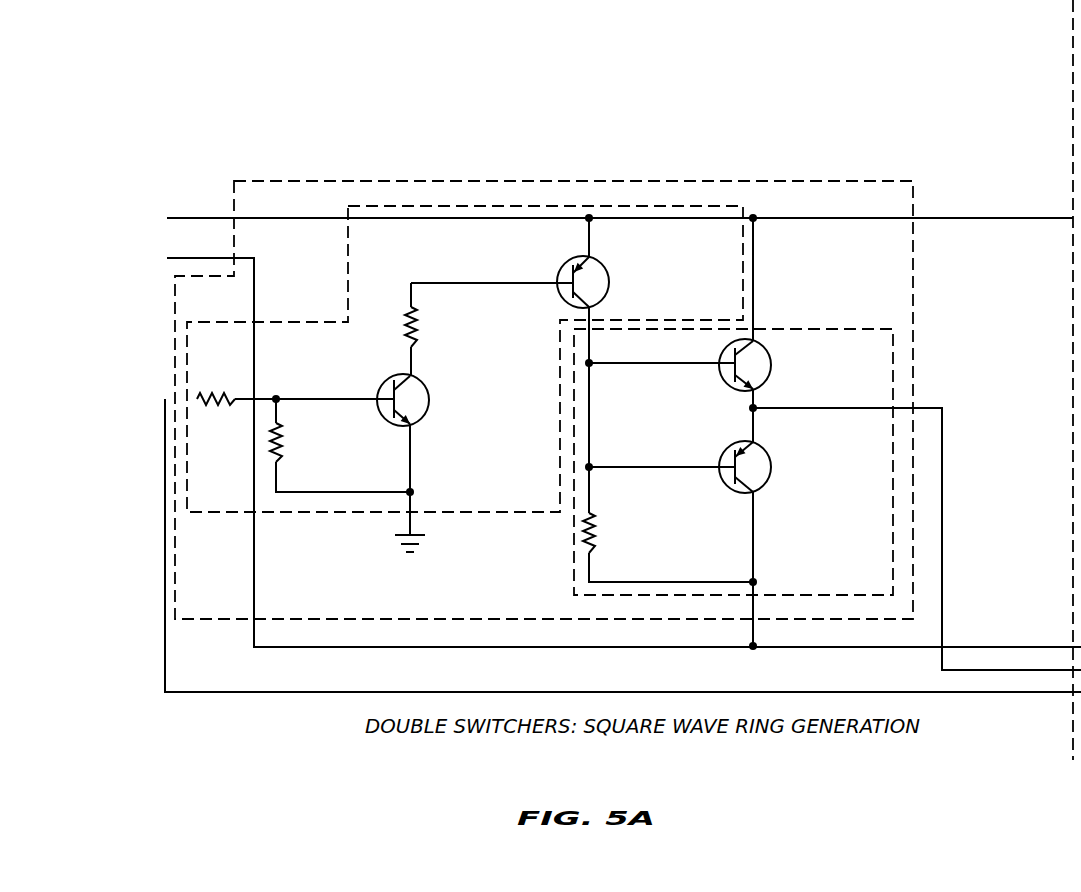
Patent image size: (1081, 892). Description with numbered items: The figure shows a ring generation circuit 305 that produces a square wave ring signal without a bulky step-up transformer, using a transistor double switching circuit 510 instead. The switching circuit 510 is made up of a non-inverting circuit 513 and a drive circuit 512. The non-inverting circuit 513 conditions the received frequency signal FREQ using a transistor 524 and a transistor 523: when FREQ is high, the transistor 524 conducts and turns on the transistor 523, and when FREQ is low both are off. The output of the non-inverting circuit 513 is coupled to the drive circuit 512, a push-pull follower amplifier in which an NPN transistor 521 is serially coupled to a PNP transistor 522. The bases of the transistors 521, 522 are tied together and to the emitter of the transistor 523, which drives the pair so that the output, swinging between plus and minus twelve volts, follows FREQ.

The ring generation circuit 305 is at (847, 110).
The switching circuit 510 is at (470, 180).
The drive circuit 512 is at (783, 328).
The non-inverting circuit 513 is at (348, 298).
The NPN transistor 521 is at (728, 386).
The PNP transistor 522 is at (750, 493).
The transistor 523 is at (563, 266).
The transistor 524 is at (386, 380).